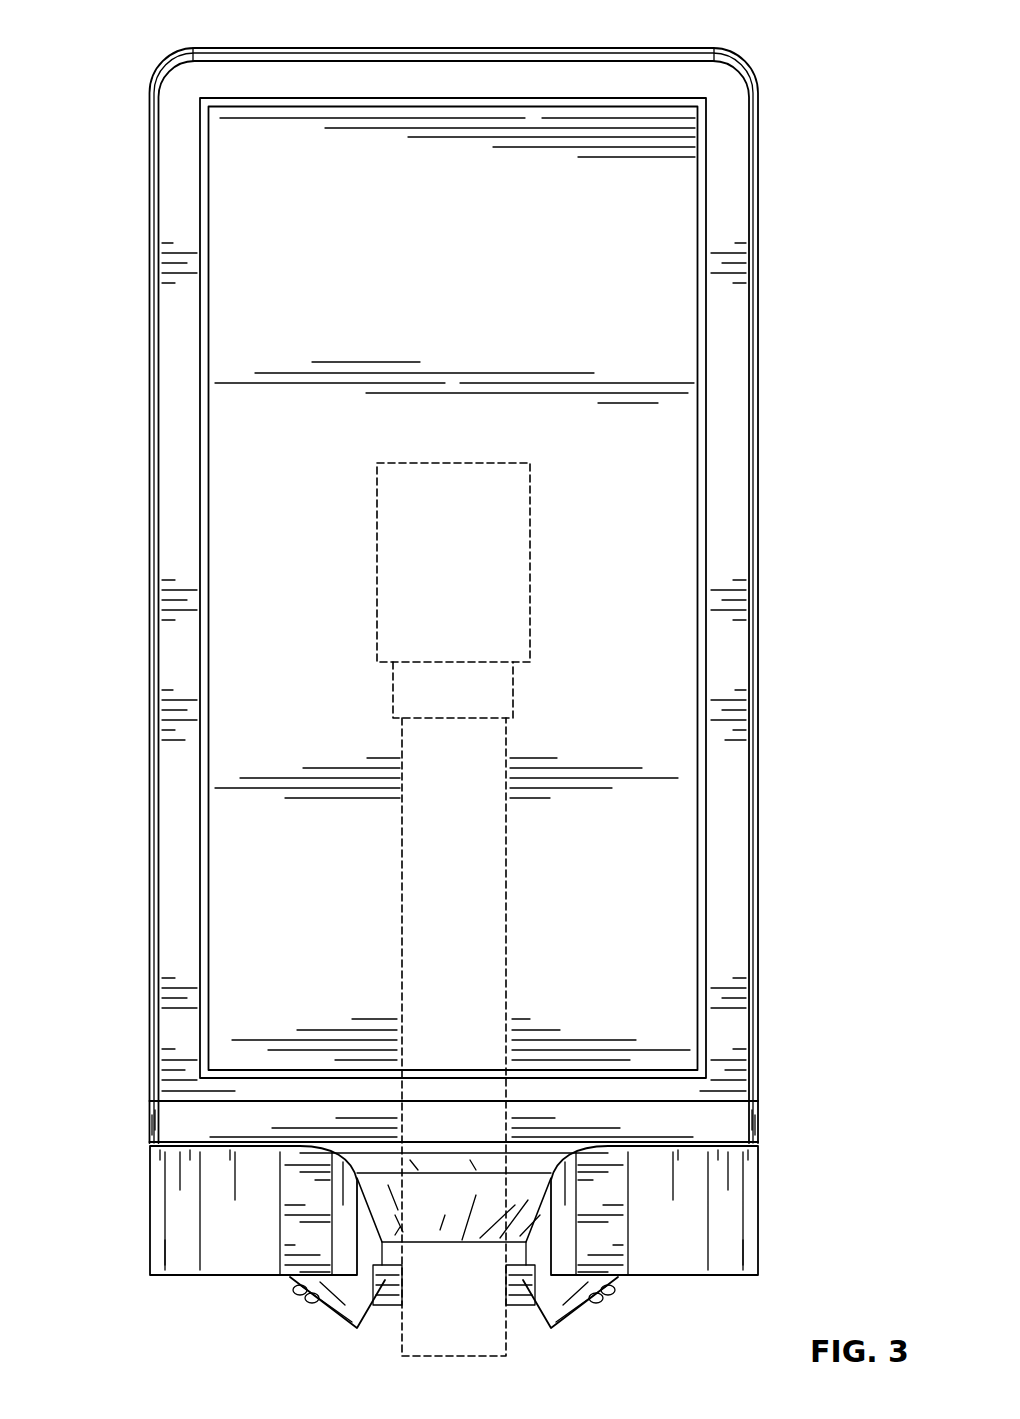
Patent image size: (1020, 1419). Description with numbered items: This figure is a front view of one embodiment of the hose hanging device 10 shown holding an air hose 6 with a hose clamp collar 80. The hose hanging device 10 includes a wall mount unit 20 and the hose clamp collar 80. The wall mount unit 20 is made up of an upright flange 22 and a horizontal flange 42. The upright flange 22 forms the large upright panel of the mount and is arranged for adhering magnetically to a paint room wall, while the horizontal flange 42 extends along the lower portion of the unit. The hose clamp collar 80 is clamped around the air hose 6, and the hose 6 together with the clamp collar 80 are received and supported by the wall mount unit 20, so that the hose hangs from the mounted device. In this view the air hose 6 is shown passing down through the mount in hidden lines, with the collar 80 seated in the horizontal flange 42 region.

The hose hanging device 10 is at (788, 50).
The wall mount unit 20 is at (112, 562).
The upright flange 22 is at (305, 322).
The air hose 6 is at (378, 895).
The hose clamp collar 80 is at (533, 1160).
The horizontal flange 42 is at (235, 1258).